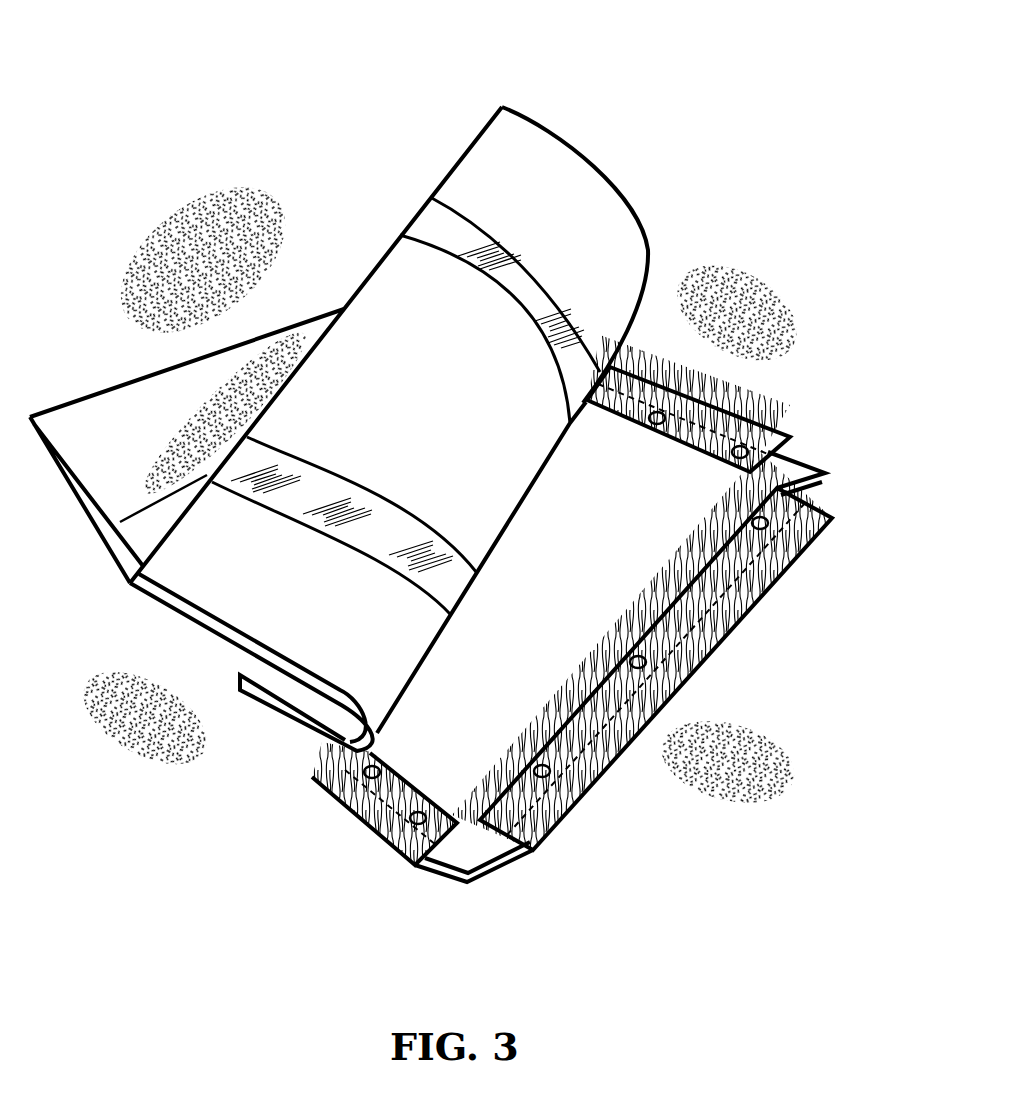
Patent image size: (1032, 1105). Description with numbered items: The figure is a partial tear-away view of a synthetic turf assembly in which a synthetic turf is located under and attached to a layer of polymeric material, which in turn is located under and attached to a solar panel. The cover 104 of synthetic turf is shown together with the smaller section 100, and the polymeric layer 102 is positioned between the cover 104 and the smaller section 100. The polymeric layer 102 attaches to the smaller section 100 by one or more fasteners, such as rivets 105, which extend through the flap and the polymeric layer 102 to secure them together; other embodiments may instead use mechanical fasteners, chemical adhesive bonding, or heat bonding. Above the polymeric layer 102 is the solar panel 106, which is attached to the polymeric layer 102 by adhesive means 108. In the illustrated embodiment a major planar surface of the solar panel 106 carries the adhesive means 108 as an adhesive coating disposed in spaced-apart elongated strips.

The smaller section 100 is at (367, 812).
The polymeric layer 102 is at (465, 788).
The cover 104 is at (790, 732).
The rivets 105 is at (553, 770).
The solar panel 106 is at (577, 223).
The adhesive means 108 is at (443, 245).